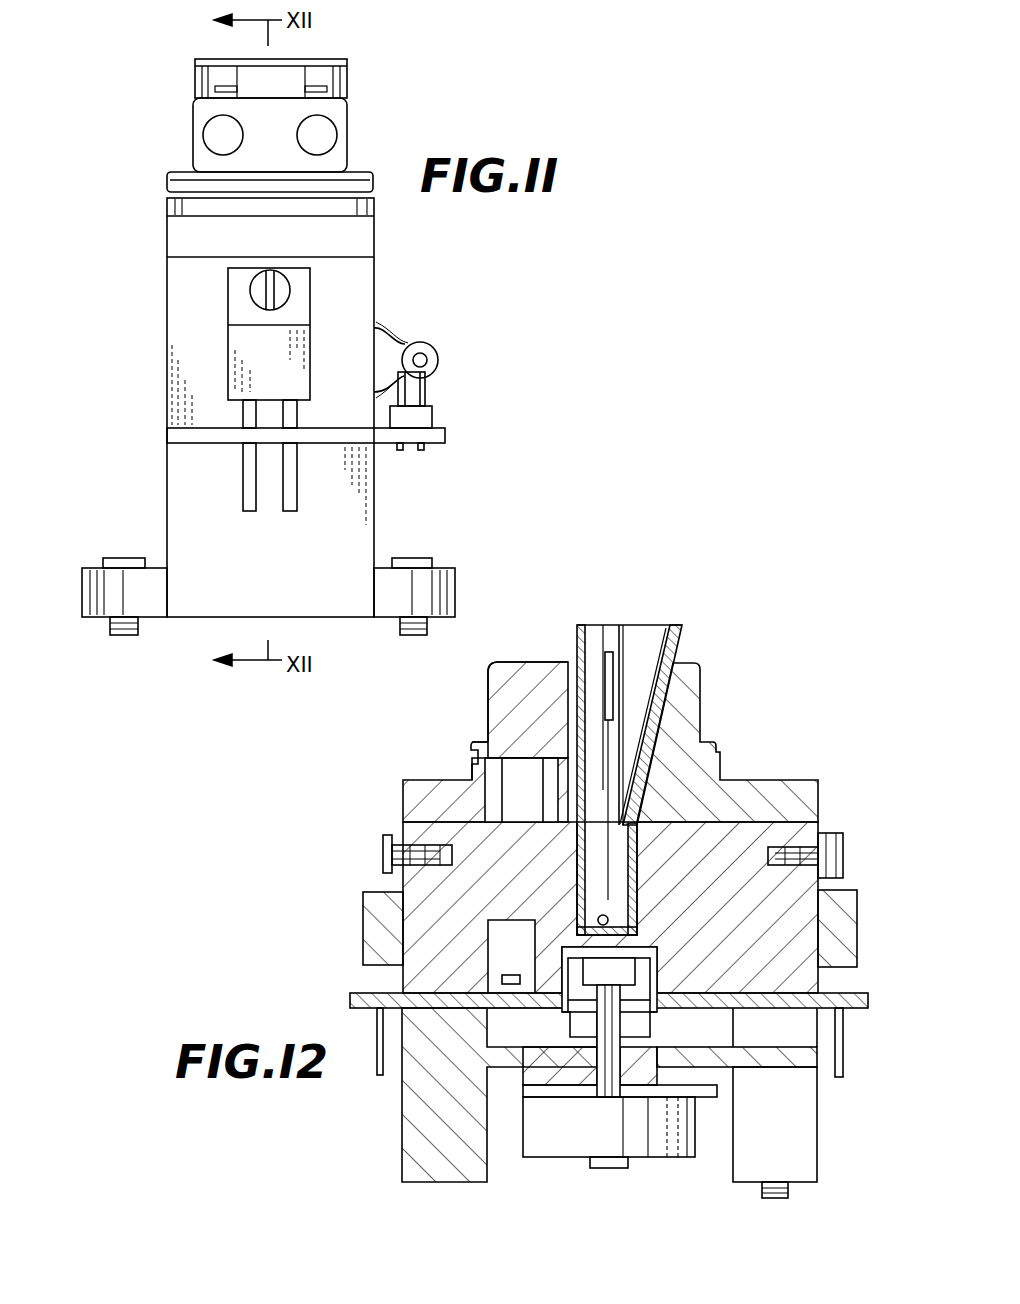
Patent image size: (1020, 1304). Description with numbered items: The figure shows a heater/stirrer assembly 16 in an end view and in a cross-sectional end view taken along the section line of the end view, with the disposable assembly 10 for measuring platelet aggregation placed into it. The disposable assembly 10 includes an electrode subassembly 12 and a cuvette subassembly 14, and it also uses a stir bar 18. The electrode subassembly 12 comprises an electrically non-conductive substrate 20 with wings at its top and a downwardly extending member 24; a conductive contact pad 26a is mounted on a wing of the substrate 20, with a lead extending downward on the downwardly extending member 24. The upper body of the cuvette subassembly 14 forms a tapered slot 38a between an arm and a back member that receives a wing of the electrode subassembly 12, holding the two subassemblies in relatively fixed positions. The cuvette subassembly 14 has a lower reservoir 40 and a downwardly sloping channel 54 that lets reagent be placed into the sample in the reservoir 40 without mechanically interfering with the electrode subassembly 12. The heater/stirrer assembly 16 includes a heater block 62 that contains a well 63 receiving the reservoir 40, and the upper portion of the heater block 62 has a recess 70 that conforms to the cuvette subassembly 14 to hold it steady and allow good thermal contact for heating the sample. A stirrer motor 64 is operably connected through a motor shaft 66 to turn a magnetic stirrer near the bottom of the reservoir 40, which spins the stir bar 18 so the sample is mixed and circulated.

In FIG. 12, the disposable assembly 10 is at (660, 596).
In FIG. 12, the electrode subassembly 12 is at (590, 663).
In FIG. 12, the cuvette subassembly 14 is at (698, 646).
In FIG. 11, the heater/stirrer assembly 16 is at (128, 406).
In FIG. 12, the heater/stirrer assembly 16 is at (828, 768).
In FIG. 12, the stir bar 18 is at (640, 920).
In FIG. 12, the substrate 20 is at (580, 736).
In FIG. 12, the downwardly extending member 24 is at (612, 793).
In FIG. 12, the contact pad 26a is at (575, 690).
In FIG. 12, the slot 38a is at (607, 650).
In FIG. 12, the lower reservoir 40 is at (655, 872).
In FIG. 12, the channel 54 is at (653, 648).
In FIG. 11, the heater block 62 is at (170, 185).
In FIG. 12, the heater block 62 is at (403, 800).
In FIG. 12, the well 63 is at (610, 921).
In FIG. 12, the stirrer motor 64 is at (657, 1148).
In FIG. 12, the motor shaft 66 is at (620, 1040).
In FIG. 12, the recess 70 is at (700, 722).